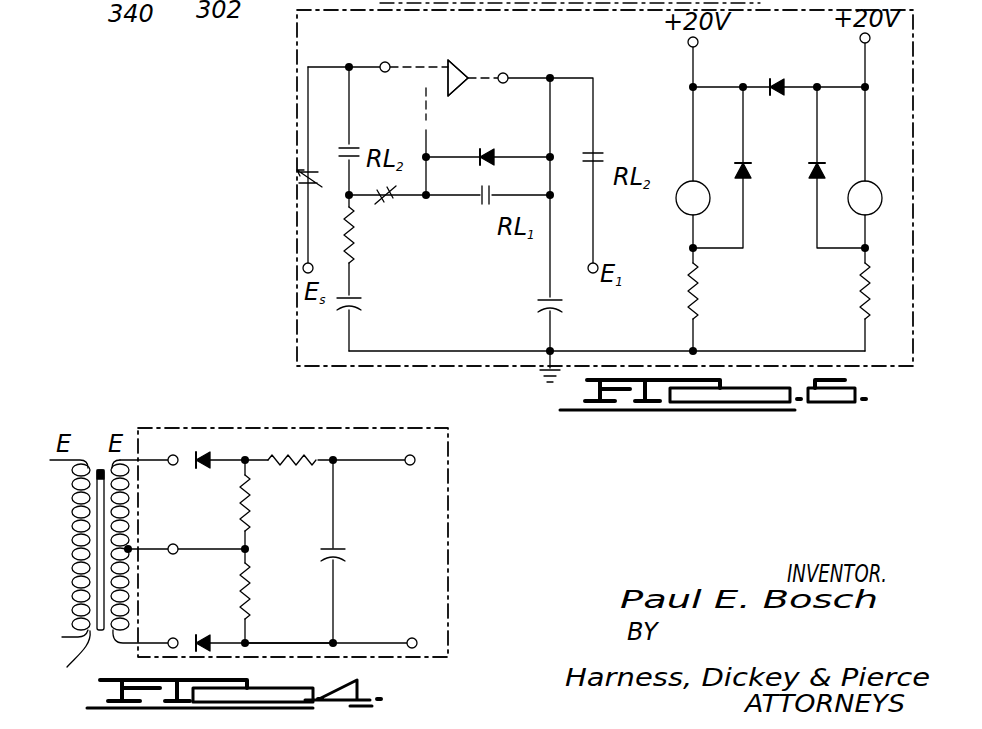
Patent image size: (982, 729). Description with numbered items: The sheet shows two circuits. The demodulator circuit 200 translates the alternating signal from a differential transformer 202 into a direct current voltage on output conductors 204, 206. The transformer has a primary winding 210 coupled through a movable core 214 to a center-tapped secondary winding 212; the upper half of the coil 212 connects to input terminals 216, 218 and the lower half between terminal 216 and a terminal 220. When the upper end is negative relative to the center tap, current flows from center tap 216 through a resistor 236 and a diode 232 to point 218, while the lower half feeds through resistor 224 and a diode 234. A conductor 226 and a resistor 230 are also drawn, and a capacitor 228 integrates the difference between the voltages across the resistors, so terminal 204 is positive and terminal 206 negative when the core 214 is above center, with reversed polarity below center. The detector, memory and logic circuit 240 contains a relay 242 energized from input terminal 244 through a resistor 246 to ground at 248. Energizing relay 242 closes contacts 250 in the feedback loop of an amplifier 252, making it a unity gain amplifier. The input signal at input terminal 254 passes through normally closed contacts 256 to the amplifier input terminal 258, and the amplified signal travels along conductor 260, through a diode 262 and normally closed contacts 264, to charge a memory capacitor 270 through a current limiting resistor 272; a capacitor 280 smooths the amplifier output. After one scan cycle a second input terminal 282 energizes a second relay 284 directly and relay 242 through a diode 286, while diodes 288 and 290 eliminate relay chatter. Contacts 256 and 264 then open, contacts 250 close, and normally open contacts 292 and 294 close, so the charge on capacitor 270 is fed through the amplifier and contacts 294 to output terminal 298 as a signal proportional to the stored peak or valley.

In FIG. 4, the demodulator circuit 200 is at (316, 553).
In FIG. 4, the differential transformer 202 is at (90, 448).
In FIG. 4, the output conductor 204 is at (415, 456).
In FIG. 4, the output conductor 206 is at (416, 640).
In FIG. 4, the primary winding 210 is at (71, 667).
In FIG. 4, the center-tapped secondary winding 212 is at (128, 466).
In FIG. 4, the movable core 214 is at (100, 466).
In FIG. 4, the input terminal 216 is at (200, 533).
In FIG. 4, the input terminal 218 is at (180, 456).
In FIG. 4, the terminal 220 is at (178, 640).
In FIG. 4, the resistor 224 is at (250, 598).
In FIG. 4, the conductor 226 is at (308, 643).
In FIG. 4, the capacitor 228 is at (338, 548).
In FIG. 4, the resistor 230 is at (310, 458).
In FIG. 4, the diode 232 is at (215, 455).
In FIG. 4, the diode 234 is at (205, 650).
In FIG. 4, the resistor 236 is at (250, 480).
In FIG. 5, the detector, memory and logic circuit 240 is at (633, 53).
In FIG. 5, the relay 242 is at (678, 207).
In FIG. 5, the input terminal 244 is at (688, 47).
In FIG. 5, the resistor 246 is at (700, 292).
In FIG. 5, the ground 248 is at (548, 372).
In FIG. 5, the contacts 250 is at (484, 206).
In FIG. 5, the amplifier 252 is at (460, 64).
In FIG. 5, the input terminal 254 is at (303, 270).
In FIG. 5, the contacts 256 is at (306, 176).
In FIG. 5, the input terminal 258 is at (387, 62).
In FIG. 5, the conductor 260 is at (548, 100).
In FIG. 5, the diode 262 is at (505, 146).
In FIG. 5, the contacts 264 is at (385, 198).
In FIG. 5, the memory or storage capacitor 270 is at (340, 304).
In FIG. 5, the current limiting resistor 272 is at (352, 245).
In FIG. 5, the capacitor 280 is at (540, 306).
In FIG. 5, the input terminal 282 is at (860, 40).
In FIG. 5, the second relay 284 is at (862, 212).
In FIG. 5, the diode 286 is at (780, 84).
In FIG. 5, the diode 288 is at (750, 178).
In FIG. 5, the diode 290 is at (812, 165).
In FIG. 5, the contacts 292 is at (352, 148).
In FIG. 5, the contacts 294 is at (590, 158).
In FIG. 5, the output terminal 298 is at (594, 275).